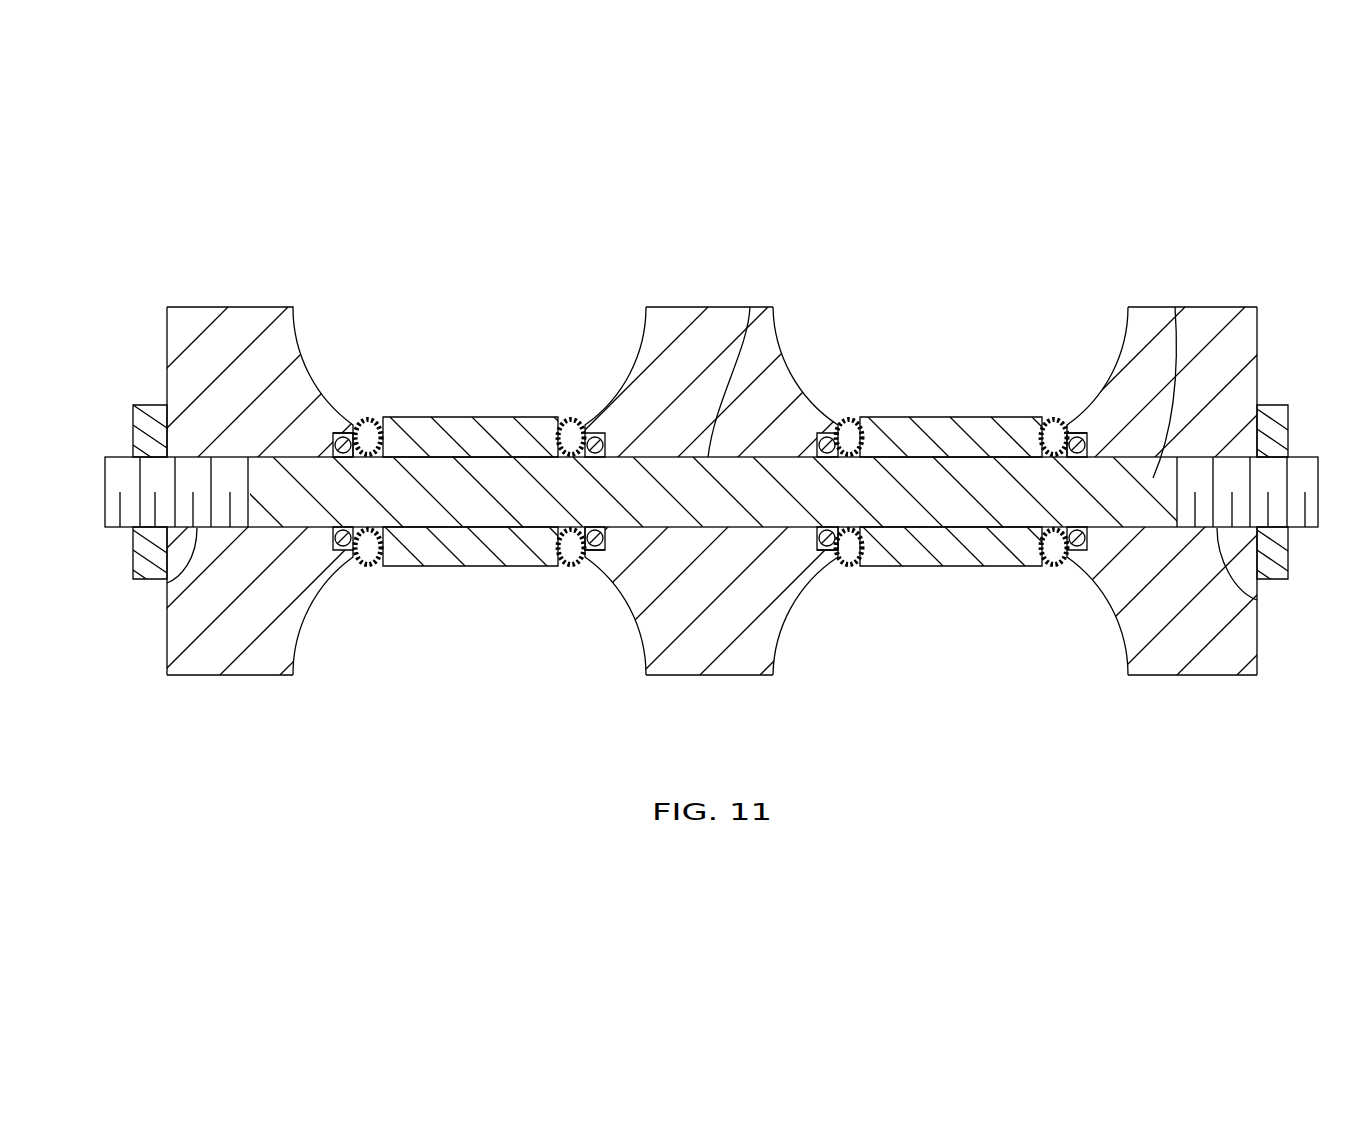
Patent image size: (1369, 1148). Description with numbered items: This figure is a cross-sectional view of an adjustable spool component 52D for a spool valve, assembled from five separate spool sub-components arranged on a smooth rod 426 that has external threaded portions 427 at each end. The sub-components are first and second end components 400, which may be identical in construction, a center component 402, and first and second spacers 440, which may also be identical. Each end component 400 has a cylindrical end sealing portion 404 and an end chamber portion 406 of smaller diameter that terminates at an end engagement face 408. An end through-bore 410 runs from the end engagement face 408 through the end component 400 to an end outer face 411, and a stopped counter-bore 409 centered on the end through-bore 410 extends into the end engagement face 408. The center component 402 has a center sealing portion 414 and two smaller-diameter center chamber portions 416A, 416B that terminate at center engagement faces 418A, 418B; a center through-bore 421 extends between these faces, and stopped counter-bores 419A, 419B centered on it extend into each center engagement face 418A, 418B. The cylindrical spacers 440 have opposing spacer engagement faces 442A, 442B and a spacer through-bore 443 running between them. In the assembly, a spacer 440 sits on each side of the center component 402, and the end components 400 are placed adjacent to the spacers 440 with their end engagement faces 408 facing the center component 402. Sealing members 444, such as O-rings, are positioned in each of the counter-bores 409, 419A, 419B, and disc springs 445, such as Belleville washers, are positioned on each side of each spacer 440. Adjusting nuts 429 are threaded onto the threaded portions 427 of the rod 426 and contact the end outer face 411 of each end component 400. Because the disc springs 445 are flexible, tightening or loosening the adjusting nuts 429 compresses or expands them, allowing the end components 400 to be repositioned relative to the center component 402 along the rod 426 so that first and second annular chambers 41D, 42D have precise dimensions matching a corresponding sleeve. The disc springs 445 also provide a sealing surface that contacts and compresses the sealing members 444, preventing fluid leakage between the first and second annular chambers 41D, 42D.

The end component 400 is at (182, 629).
The center component 402 is at (690, 652).
The end sealing portion 404 is at (197, 677).
The end chamber portion 406 is at (300, 643).
The end engagement face 408 is at (357, 568).
The stopped counter-bore 409 is at (336, 540).
The end through-bore 410 is at (167, 583).
The end outer face 411 is at (167, 350).
The center sealing portion 414 is at (742, 676).
The center chamber portion 416A is at (632, 613).
The center chamber portion 416B is at (793, 612).
The center engagement face 418A is at (572, 575).
The center engagement face 418B is at (842, 572).
The stopped counter-bore 419A is at (605, 549).
The stopped counter-bore 419B is at (818, 540).
The center through-bore 421 is at (750, 307).
The smooth rod 426 is at (1175, 307).
The external threaded portion 427 is at (108, 492).
The adjusting nut 429 is at (160, 405).
The spacer 440 is at (473, 417).
The spacer engagement face 442A is at (380, 417).
The spacer engagement face 442B is at (563, 417).
The spacer through-bore 443 is at (460, 533).
The sealing member 444 is at (350, 437).
The disc spring 445 is at (358, 417).
The first annular chamber 41D is at (432, 700).
The second annular chamber 42D is at (990, 698).
The adjustable spool component 52D is at (1125, 220).